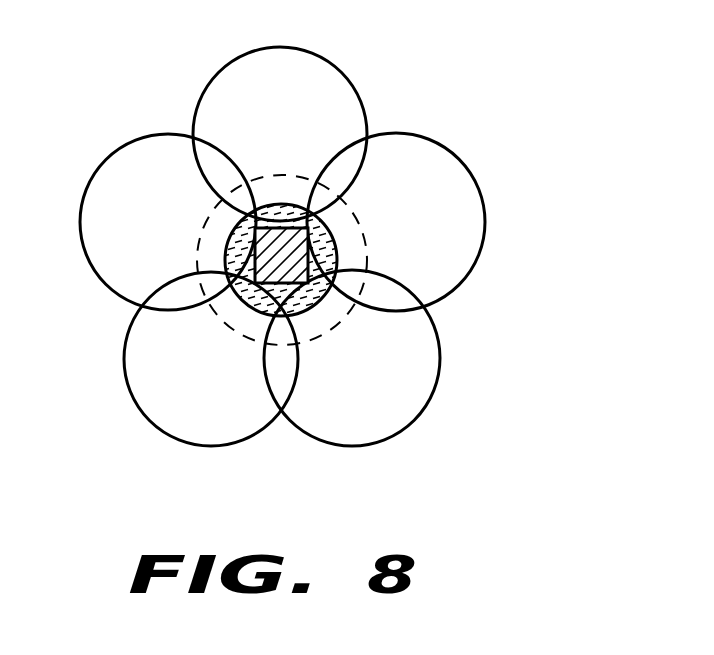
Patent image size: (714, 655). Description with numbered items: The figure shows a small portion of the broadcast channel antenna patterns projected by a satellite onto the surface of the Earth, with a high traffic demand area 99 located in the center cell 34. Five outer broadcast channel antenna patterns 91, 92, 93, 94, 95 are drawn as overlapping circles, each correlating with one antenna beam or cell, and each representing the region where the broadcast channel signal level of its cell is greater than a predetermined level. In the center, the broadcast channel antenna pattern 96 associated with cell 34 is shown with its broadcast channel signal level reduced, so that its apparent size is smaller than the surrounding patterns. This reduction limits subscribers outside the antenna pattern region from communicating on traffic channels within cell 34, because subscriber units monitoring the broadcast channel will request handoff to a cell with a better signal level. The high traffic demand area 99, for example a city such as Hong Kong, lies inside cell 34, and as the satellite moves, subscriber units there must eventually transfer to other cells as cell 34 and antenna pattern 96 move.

The broadcast channel antenna pattern 91 is at (335, 63).
The broadcast channel antenna pattern 92 is at (479, 250).
The broadcast channel antenna pattern 93 is at (346, 447).
The broadcast channel antenna pattern 94 is at (125, 380).
The broadcast channel antenna pattern 95 is at (120, 147).
The broadcast channel antenna pattern 96 is at (360, 222).
The cell 34 is at (367, 250).
The high traffic demand area 99 is at (255, 259).